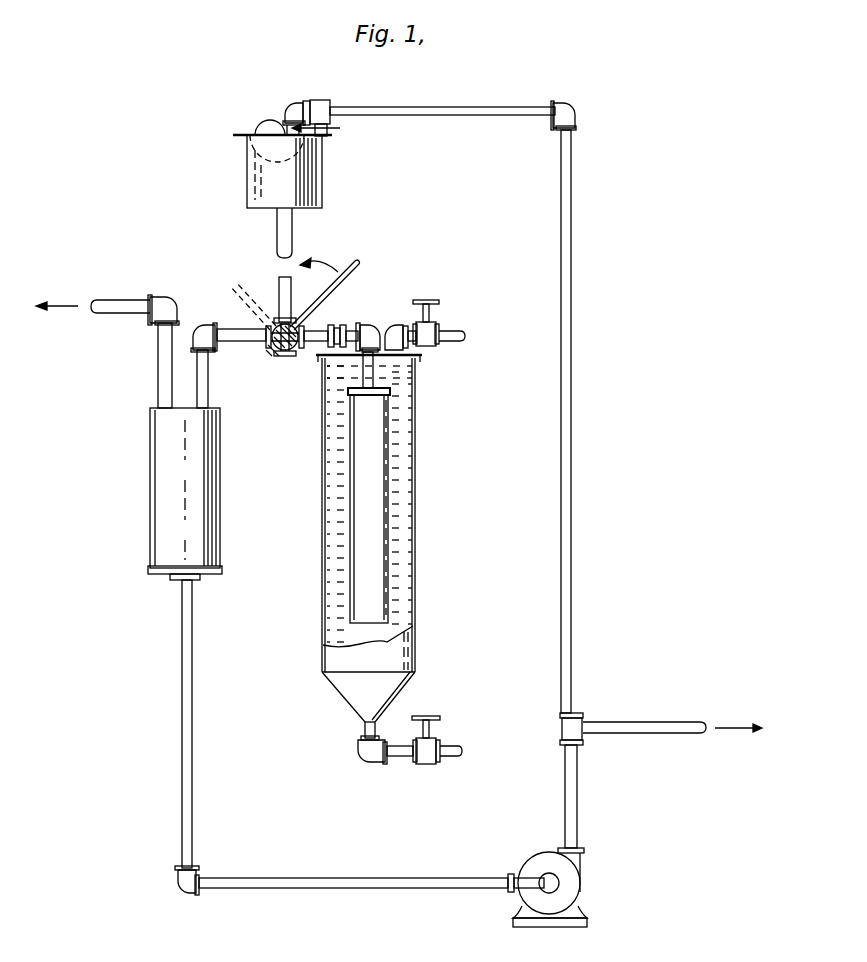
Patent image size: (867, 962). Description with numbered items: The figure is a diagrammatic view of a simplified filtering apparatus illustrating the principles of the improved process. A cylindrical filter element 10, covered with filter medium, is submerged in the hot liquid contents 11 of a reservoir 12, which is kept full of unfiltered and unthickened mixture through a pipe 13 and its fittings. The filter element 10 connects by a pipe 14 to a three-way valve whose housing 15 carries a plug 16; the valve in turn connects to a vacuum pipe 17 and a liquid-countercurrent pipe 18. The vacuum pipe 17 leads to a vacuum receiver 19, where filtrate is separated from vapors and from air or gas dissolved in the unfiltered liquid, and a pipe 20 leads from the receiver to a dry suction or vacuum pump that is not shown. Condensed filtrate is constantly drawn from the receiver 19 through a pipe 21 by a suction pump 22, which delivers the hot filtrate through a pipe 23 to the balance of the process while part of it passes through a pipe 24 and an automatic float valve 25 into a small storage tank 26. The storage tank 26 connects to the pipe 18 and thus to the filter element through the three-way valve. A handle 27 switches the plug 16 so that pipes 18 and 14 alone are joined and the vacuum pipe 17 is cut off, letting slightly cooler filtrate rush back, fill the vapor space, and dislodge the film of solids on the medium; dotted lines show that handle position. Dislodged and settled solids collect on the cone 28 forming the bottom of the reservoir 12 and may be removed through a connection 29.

The filter element 10 is at (360, 495).
The hot liquid contents 11 is at (406, 446).
The reservoir 12 is at (418, 510).
The pipe 13 is at (456, 333).
The pipe 14 is at (376, 358).
The three-way valve housing 15 is at (275, 349).
The valve plug 16 is at (290, 352).
The vacuum pipe 17 is at (210, 388).
The liquid-countercurrent pipe 18 is at (293, 246).
The vacuum receiver 19 is at (165, 488).
The pipe 20 is at (118, 314).
The pipe 21 is at (182, 790).
The suction pump 22 is at (575, 882).
The pipe 23 is at (662, 735).
The pipe 24 is at (572, 345).
The automatic float valve 25 is at (332, 128).
The storage tank 26 is at (247, 172).
The handle 27 is at (341, 284).
The cone 28 is at (345, 703).
The connection 29 is at (434, 734).